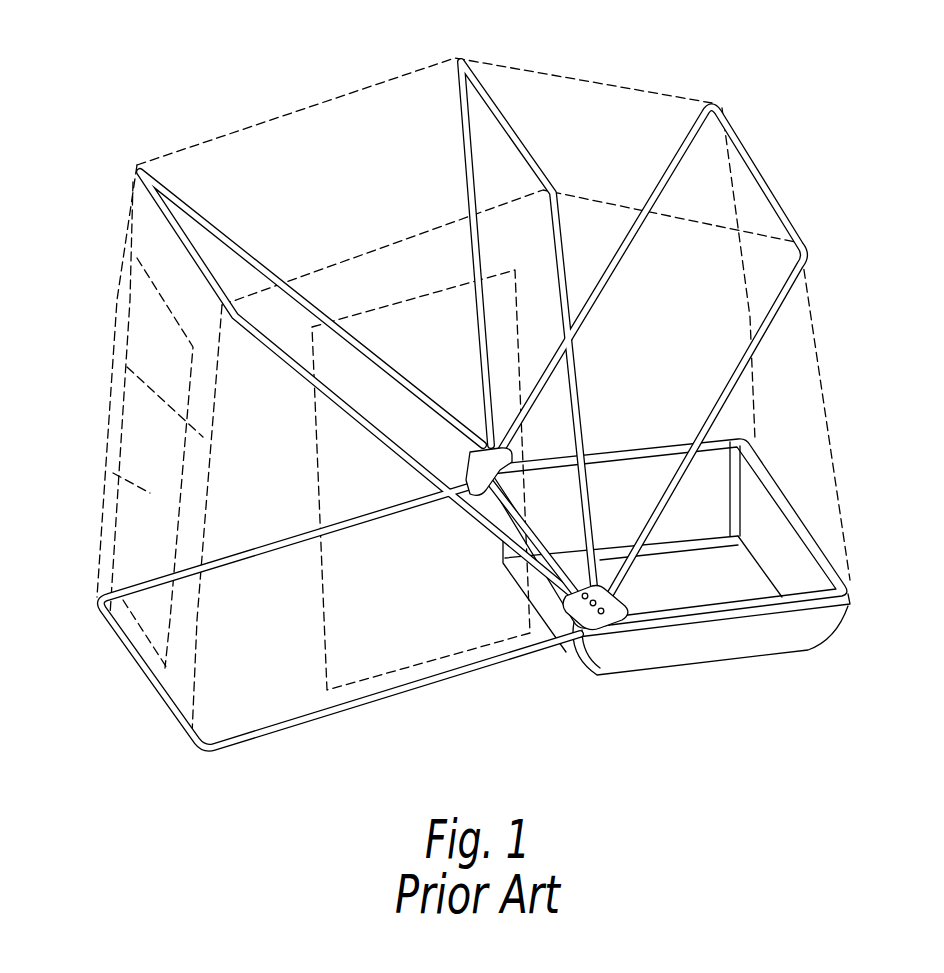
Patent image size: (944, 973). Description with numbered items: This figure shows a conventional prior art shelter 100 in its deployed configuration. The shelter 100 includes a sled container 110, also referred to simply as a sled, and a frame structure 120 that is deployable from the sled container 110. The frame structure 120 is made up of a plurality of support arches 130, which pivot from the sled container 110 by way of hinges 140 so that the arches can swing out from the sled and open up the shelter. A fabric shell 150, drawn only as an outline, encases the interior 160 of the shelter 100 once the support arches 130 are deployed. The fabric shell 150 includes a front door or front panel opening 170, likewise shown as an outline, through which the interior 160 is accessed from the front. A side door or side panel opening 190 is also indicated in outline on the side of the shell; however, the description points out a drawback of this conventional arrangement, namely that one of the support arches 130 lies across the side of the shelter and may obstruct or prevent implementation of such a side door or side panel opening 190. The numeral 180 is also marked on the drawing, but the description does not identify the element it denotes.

The conventional shelter 100 is at (147, 77).
The sled container 110 is at (667, 668).
The frame structure 120 is at (548, 100).
The support arch 130 is at (170, 205).
The hinge 140 is at (472, 440).
The fabric shell 150 is at (125, 363).
The interior 160 is at (683, 356).
The front door or front panel opening 170 is at (105, 470).
The base 180 is at (258, 620).
The side door or side panel opening 190 is at (448, 592).